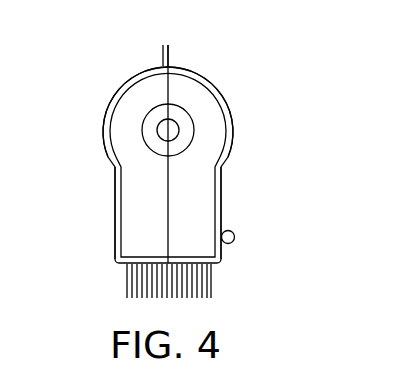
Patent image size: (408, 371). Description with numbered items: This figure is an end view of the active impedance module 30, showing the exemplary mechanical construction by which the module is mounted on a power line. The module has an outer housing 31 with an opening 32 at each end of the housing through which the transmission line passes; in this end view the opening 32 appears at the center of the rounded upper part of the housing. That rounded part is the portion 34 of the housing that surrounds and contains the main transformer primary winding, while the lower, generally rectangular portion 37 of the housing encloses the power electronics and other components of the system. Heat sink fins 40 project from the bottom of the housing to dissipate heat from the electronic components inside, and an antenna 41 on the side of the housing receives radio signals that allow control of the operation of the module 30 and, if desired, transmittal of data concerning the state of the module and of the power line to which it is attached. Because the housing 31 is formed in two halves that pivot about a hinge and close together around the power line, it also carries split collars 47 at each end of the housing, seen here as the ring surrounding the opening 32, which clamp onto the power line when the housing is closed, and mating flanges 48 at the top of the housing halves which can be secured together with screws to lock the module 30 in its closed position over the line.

The active impedance module 30 is at (136, 75).
The outer housing 31 is at (231, 111).
The opening 32 is at (170, 128).
The portion of the housing 34 is at (184, 70).
The portion of the housing 37 is at (222, 192).
The heat sink fins 40 is at (127, 293).
The antenna 41 is at (233, 231).
The split collar 47 is at (145, 118).
The mating flange 48 is at (167, 50).